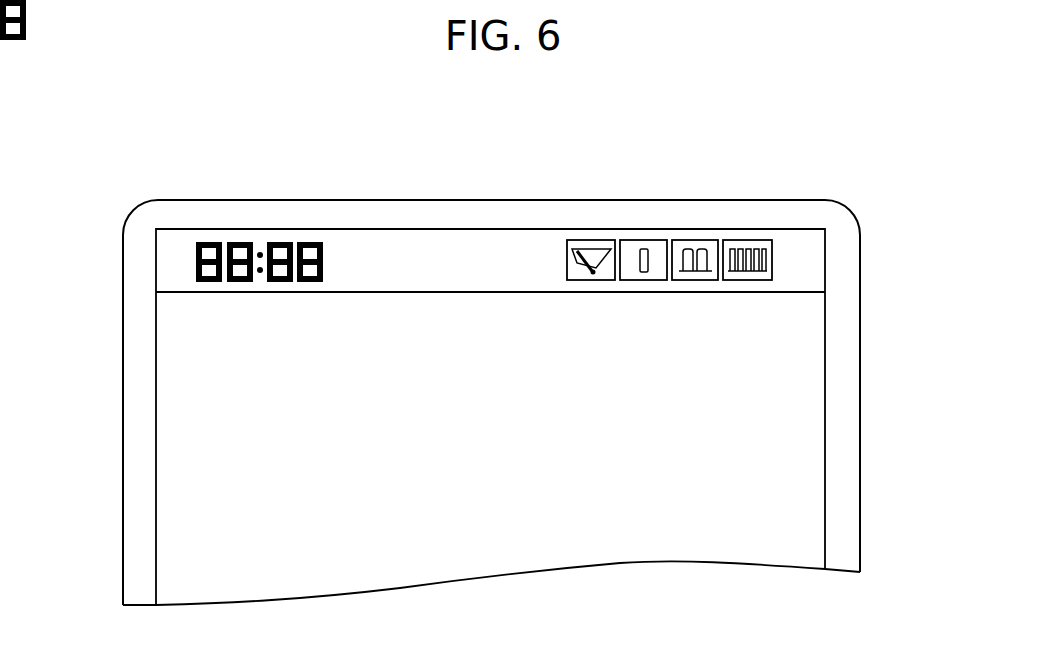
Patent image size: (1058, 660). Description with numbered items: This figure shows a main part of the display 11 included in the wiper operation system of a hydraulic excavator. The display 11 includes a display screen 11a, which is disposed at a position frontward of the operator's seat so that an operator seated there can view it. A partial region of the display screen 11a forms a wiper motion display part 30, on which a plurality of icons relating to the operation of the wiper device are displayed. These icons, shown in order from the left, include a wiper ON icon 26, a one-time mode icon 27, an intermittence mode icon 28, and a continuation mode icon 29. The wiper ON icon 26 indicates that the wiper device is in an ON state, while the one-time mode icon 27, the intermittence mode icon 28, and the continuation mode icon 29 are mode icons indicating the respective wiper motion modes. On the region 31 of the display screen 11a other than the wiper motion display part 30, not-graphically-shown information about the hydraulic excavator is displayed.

The display 11 is at (852, 198).
The display screen 11a is at (157, 372).
The wiper ON icon 26 is at (590, 240).
The one-time mode icon 27 is at (644, 240).
The intermittence mode icon 28 is at (695, 240).
The continuation mode icon 29 is at (747, 240).
The wiper motion display part 30 is at (553, 244).
The region other than the wiper motion display part 31 is at (210, 519).